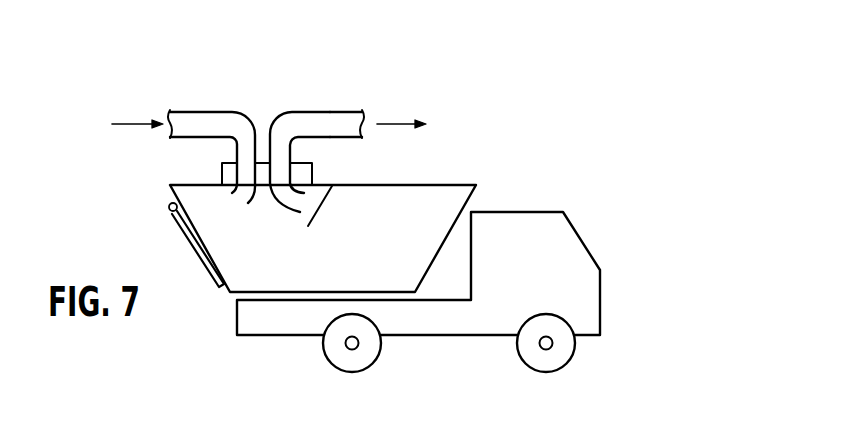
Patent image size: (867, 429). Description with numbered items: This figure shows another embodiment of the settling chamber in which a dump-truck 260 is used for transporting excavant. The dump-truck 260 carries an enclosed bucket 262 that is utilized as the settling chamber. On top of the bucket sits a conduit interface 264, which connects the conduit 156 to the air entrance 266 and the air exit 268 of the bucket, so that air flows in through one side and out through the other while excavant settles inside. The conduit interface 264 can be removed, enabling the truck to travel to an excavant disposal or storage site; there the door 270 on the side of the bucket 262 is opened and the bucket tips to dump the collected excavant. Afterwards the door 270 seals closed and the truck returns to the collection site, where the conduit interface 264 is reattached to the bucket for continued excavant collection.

The dump-truck 260 is at (445, 109).
The enclosed bucket 262 is at (447, 192).
The conduit interface 264 is at (222, 170).
The air entrance 266 is at (247, 152).
The air exit 268 is at (278, 162).
The conduit 156 is at (347, 118).
The door 270 is at (197, 245).